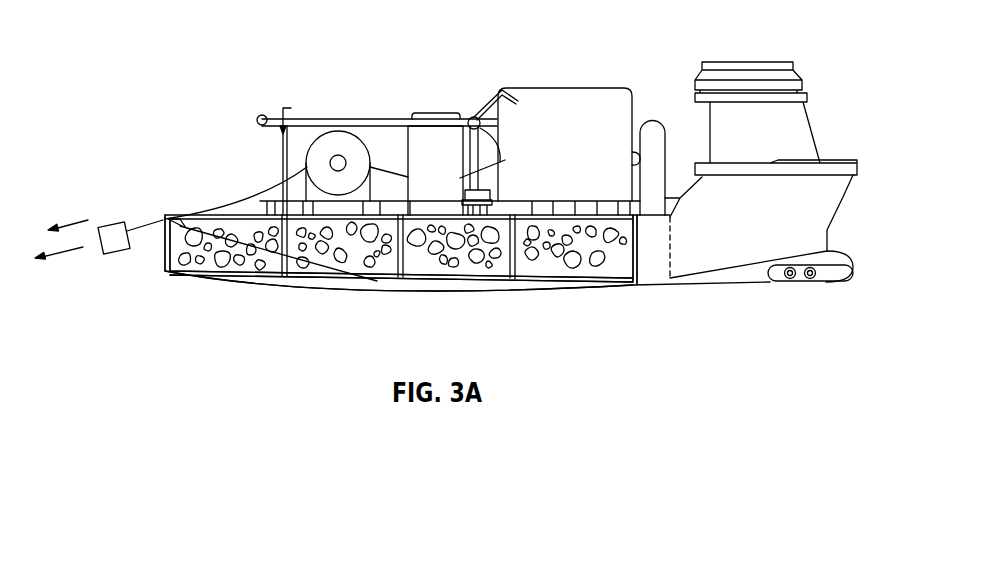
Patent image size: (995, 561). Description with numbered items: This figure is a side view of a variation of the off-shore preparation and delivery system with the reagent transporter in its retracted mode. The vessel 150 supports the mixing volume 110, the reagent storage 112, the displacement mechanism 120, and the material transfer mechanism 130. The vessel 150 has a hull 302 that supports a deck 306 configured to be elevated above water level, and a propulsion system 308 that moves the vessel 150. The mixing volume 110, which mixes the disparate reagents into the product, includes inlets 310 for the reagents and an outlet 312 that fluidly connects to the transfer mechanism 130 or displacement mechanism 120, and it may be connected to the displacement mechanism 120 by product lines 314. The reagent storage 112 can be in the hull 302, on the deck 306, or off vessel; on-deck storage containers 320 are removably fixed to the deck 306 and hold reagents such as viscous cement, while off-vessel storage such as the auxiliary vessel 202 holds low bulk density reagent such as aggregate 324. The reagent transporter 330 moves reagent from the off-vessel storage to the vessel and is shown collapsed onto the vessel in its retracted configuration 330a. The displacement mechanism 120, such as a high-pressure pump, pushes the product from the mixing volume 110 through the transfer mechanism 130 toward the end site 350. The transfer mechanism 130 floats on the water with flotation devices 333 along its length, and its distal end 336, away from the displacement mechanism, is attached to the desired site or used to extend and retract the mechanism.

The mixing volume 110 is at (594, 87).
The reagent storage 112 is at (560, 270).
The displacement mechanism 120 is at (432, 117).
The material transfer mechanism 130 is at (338, 131).
The vessel 150 is at (710, 287).
The auxiliary vessel 202 is at (190, 284).
The hull 302 is at (648, 272).
The deck 306 is at (265, 176).
The propulsion system 308 is at (785, 283).
The inlets 310 is at (633, 156).
The outlet 312 is at (505, 160).
The product lines 314 is at (475, 115).
The storage containers 320 is at (650, 120).
The aggregate 324 is at (452, 278).
The reagent transporter 330 is at (397, 167).
The reagent transporter in retracted configuration 330a is at (283, 108).
The flotation devices 333 is at (117, 253).
The distal end 336 is at (55, 254).
The end site 350 is at (75, 220).